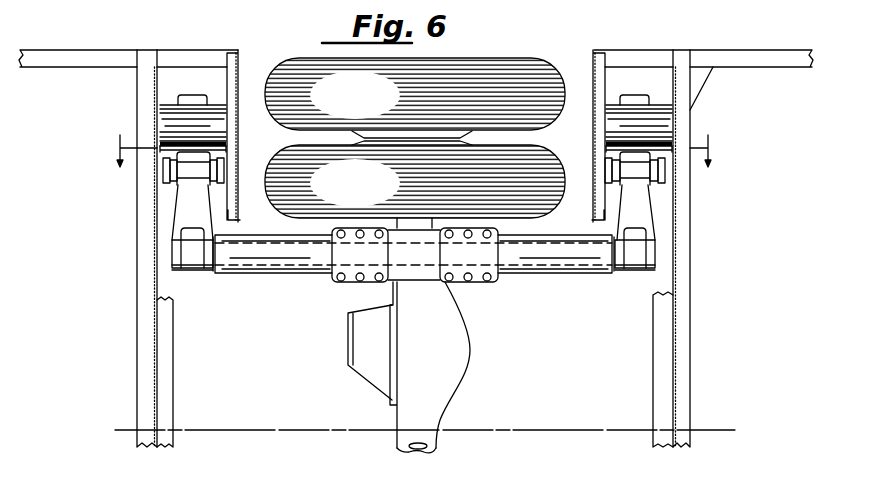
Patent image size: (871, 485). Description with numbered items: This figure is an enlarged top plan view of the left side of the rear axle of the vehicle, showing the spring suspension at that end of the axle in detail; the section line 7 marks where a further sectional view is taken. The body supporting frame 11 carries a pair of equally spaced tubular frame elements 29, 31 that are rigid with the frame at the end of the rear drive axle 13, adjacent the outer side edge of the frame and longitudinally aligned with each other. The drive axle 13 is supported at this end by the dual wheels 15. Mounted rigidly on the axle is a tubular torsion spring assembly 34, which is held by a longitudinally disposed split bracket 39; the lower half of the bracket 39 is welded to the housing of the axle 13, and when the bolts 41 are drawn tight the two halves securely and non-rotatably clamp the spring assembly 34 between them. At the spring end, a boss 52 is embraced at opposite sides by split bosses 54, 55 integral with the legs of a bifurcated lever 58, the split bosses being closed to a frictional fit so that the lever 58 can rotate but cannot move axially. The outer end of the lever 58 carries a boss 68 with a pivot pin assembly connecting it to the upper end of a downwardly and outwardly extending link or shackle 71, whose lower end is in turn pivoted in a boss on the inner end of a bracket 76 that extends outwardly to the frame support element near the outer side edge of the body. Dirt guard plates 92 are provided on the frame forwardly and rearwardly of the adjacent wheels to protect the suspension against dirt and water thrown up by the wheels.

The section line 7- 7 is at (415, 151).
The body supporting frame 11 is at (690, 307).
The rear drive axle 13 is at (462, 378).
The dual wheels 15 is at (514, 73).
The tubular frame element 29 is at (658, 112).
The tubular frame element 31 is at (215, 110).
The tubular torsion spring assembly 34 is at (568, 275).
The split bracket 39 is at (486, 283).
The bolt 41 is at (468, 283).
The boss 52 is at (181, 272).
The split boss 54 is at (208, 270).
The split boss 55 is at (190, 270).
The bifurcated lever 58 is at (180, 208).
The boss 68 is at (196, 178).
The link or shackle 71 is at (661, 188).
The bracket 76 is at (181, 100).
The dirt guard plate 92 is at (240, 148).